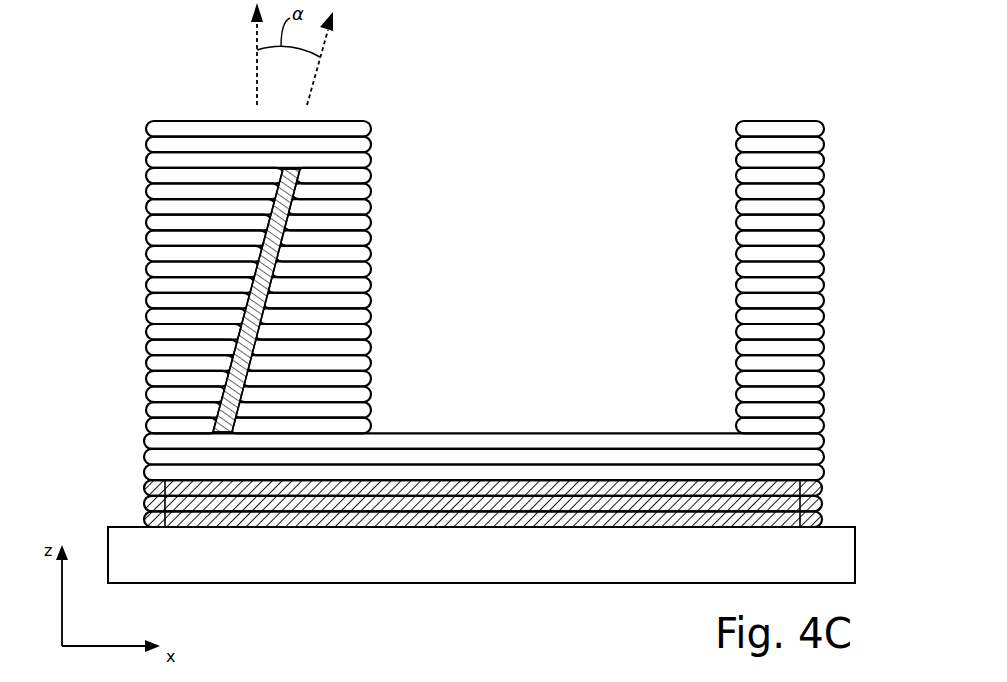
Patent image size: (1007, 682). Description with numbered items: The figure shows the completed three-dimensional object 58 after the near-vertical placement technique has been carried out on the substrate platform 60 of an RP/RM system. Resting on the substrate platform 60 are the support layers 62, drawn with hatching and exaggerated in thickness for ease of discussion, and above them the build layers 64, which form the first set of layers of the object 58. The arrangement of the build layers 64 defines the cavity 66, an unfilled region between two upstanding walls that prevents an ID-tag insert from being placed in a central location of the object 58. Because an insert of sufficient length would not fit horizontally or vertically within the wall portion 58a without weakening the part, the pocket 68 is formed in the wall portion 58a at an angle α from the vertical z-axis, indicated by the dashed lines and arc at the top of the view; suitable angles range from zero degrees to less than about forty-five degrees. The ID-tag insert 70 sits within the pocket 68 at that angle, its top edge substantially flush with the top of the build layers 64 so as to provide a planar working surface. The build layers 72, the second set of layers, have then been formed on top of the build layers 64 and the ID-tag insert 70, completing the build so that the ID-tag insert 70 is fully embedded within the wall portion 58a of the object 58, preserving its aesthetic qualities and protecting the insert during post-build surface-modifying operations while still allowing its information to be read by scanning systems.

The 3D object 58 is at (130, 111).
The wall portion 58a is at (382, 336).
The substrate platform 60 is at (455, 568).
The support layers 62 is at (100, 480).
The build layers 64 is at (440, 324).
The cavity 66 is at (533, 180).
The pocket 68 is at (288, 266).
The ID-tag insert 70 is at (317, 300).
The build layers 72 is at (100, 131).